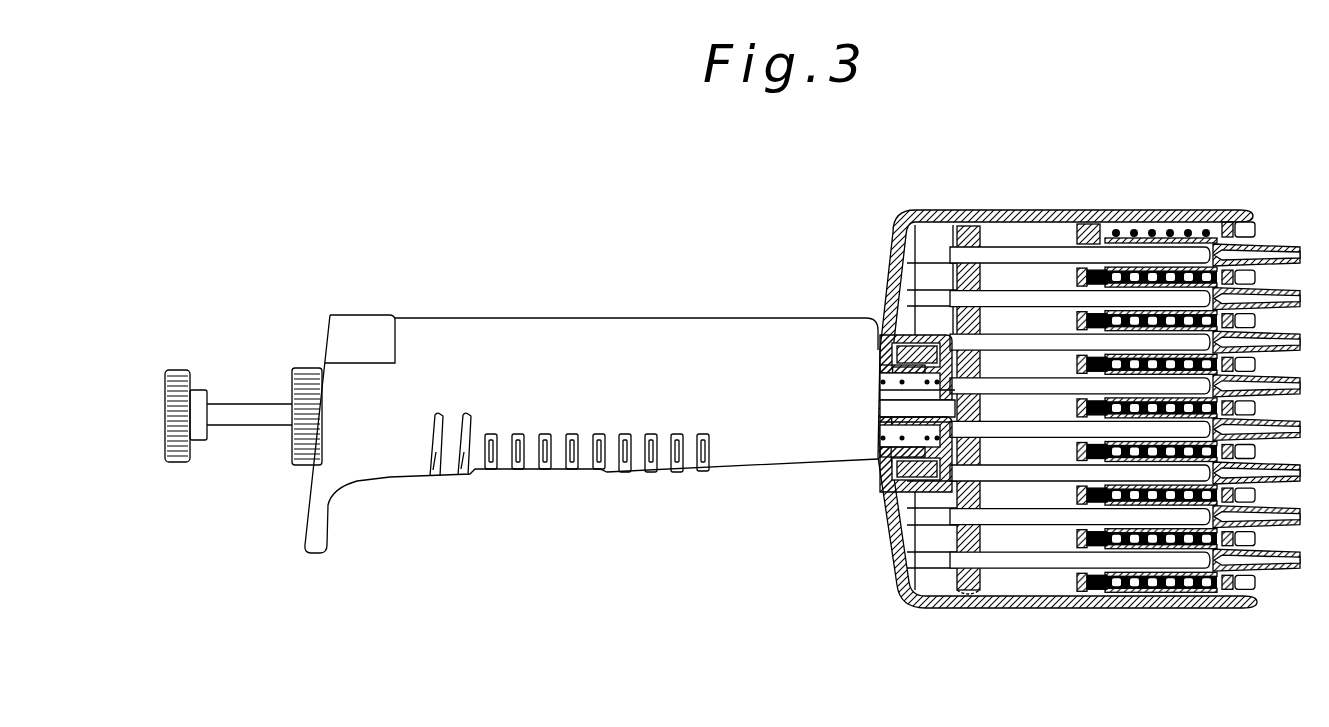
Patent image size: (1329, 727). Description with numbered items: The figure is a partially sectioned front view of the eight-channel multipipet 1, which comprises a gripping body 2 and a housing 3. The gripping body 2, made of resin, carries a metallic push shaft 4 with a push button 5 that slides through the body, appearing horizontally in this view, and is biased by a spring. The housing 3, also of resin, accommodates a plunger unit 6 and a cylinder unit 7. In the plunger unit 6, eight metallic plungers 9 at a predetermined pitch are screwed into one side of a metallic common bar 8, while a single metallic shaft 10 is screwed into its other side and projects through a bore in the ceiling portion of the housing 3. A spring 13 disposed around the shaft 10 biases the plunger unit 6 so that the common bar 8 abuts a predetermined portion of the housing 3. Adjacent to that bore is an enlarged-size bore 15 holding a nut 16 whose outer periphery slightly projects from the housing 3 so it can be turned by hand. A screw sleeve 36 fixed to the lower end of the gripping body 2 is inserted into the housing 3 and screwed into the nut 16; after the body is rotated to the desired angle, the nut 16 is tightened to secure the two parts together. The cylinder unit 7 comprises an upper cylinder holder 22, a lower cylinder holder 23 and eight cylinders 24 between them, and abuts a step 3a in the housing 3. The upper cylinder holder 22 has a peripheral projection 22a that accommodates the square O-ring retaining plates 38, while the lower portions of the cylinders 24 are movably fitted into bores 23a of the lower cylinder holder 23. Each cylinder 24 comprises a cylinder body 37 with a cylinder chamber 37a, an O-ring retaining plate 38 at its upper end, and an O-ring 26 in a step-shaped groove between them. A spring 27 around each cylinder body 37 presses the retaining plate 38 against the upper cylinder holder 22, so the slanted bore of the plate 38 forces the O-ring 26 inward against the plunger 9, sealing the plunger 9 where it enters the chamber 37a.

The 8-channel multipipet 1 is at (667, 290).
The gripping body 2 is at (541, 303).
The housing 3 is at (1054, 206).
The step 3a is at (1100, 604).
The push shaft 4 is at (251, 412).
The push button 5 is at (200, 396).
The plunger unit 6 is at (1028, 138).
The cylinder unit 7 is at (1273, 136).
The common bar 8 is at (961, 240).
The plungers 9 is at (1012, 250).
The shaft 10 is at (913, 410).
The spring 13 is at (880, 478).
The enlarged-size bore 15 is at (900, 506).
The nut 16 is at (910, 528).
The upper cylinder holder 22 is at (1080, 230).
The peripheral projection 22a is at (1100, 222).
The lower cylinder holder 23 is at (1228, 226).
The bores 23a is at (1252, 224).
The cylinders 24 is at (1177, 228).
The O-ring 26 is at (1100, 582).
The spring 27 is at (1205, 592).
The screw sleeve 36 is at (880, 357).
The cylinder body 37 is at (1150, 582).
The cylinder chamber 37a is at (1177, 575).
The O-ring retaining plate 38 is at (1080, 585).